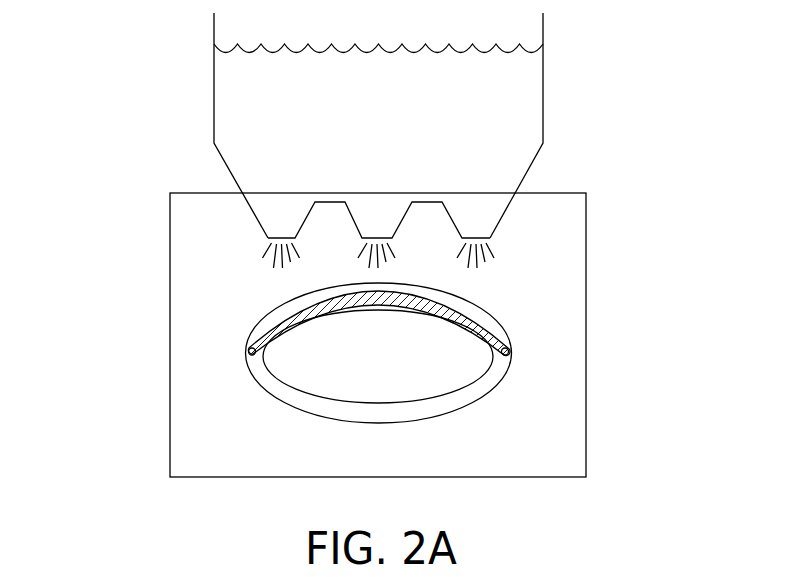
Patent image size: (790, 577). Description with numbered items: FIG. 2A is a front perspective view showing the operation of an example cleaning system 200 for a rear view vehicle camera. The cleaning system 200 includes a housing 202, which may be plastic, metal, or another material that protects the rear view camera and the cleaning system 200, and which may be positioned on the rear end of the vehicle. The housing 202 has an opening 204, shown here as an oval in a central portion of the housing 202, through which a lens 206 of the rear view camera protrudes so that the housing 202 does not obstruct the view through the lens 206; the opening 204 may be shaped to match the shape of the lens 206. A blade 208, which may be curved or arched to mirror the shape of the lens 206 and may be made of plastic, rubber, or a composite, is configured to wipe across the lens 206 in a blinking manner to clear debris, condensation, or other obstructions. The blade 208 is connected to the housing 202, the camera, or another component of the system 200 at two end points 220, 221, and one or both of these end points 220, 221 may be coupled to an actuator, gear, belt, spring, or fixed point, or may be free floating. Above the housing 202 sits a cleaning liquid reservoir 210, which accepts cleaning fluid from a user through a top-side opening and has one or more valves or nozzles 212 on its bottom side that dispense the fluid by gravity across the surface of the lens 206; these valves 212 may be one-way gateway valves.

The cleaning system 200 is at (118, 131).
The housing 202 is at (170, 252).
The opening 204 is at (263, 387).
The lens 206 is at (467, 387).
The blade 208 is at (467, 315).
The cleaning liquid reservoir 210 is at (543, 95).
The valves or nozzles 212 is at (499, 223).
The end point 220 is at (247, 351).
The end point 221 is at (508, 350).